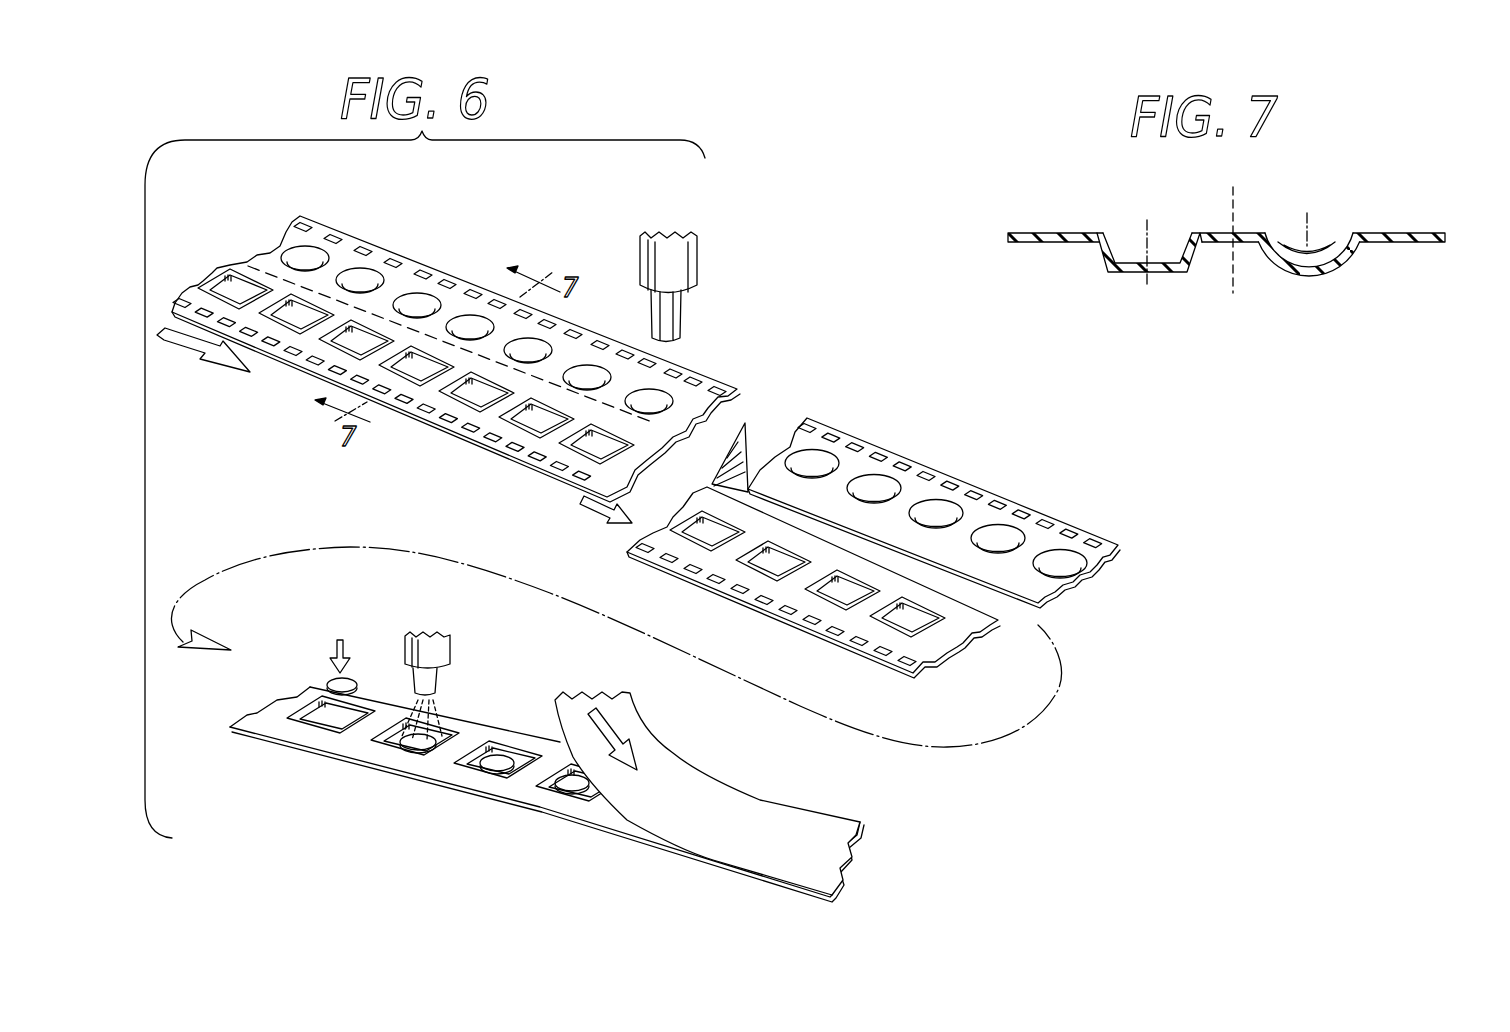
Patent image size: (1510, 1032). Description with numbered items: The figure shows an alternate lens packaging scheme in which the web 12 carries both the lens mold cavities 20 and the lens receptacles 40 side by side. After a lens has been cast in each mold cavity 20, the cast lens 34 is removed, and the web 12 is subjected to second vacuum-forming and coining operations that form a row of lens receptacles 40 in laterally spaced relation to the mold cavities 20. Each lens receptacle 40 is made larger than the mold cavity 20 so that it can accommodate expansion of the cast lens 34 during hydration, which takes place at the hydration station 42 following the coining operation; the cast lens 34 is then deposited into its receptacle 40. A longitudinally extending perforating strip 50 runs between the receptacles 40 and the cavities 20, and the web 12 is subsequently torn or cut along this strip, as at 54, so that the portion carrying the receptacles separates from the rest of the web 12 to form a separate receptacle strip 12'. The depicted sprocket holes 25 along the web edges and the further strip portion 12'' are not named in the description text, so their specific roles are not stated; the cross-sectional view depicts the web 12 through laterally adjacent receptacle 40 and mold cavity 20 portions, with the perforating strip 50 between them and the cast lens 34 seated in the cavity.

In FIG. 6, the web 12 is at (646, 406).
In FIG. 7, the web 12 is at (1246, 271).
In FIG. 6, the receptacle strip 12' is at (615, 694).
In FIG. 6, the strip cover portion 12'' is at (707, 793).
In FIG. 6, the mold cavity 20 is at (357, 273).
In FIG. 7, the mold cavity 20 is at (1327, 270).
In FIG. 6, the sprocket holes 25 is at (680, 367).
In FIG. 7, the sprocket holes 25 is at (1032, 232).
In FIG. 6, the cast lens 34 is at (307, 266).
In FIG. 7, the cast lens 34 is at (1317, 243).
In FIG. 6, the lens receptacle 40 is at (340, 347).
In FIG. 7, the lens receptacle 40 is at (1137, 253).
In FIG. 6, the hydration station 42 is at (448, 650).
In FIG. 6, the perforating strip 50 is at (652, 422).
In FIG. 7, the perforating strip 50 is at (1220, 260).
In FIG. 6, the tearing or cutting 54 is at (748, 460).